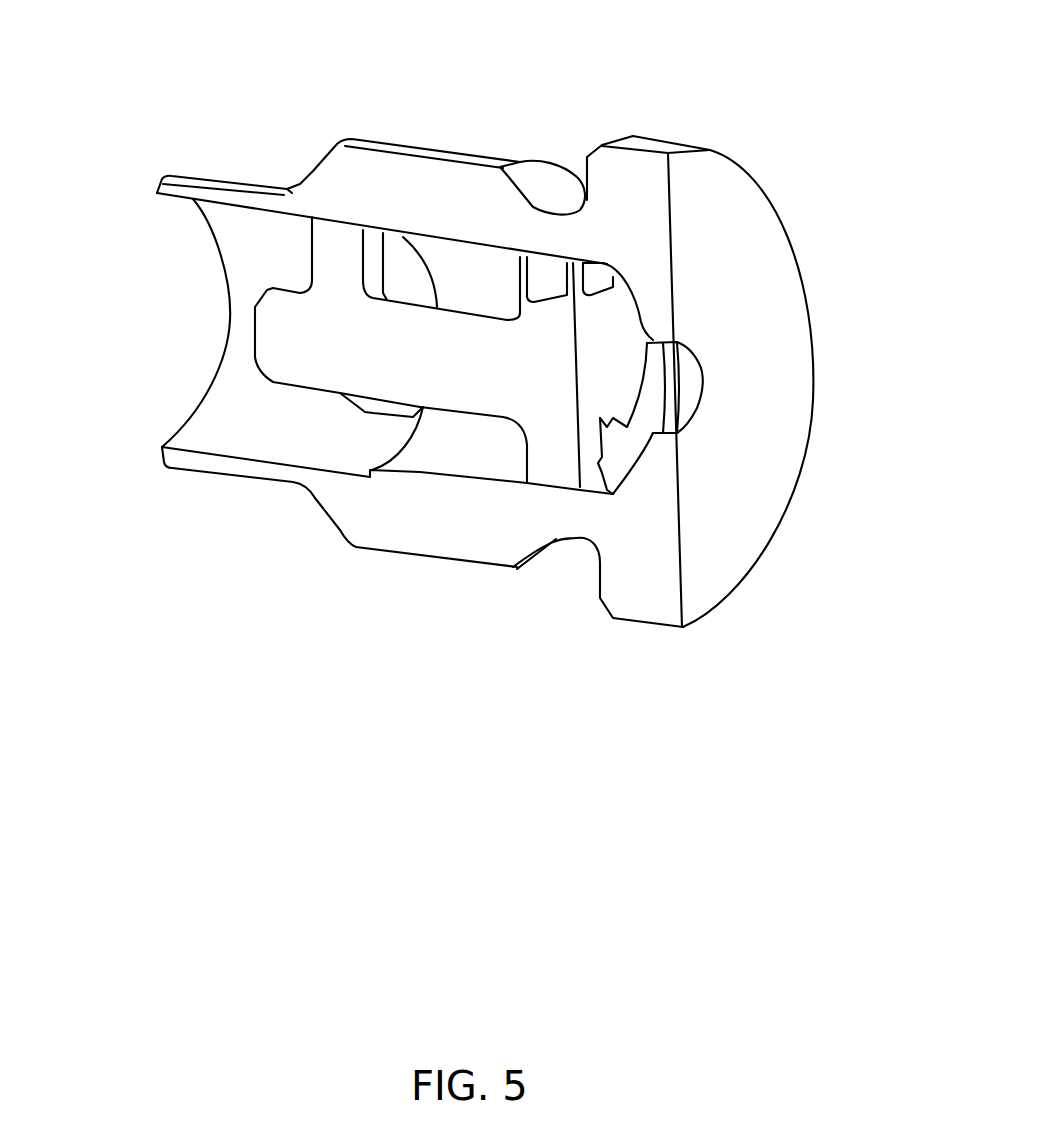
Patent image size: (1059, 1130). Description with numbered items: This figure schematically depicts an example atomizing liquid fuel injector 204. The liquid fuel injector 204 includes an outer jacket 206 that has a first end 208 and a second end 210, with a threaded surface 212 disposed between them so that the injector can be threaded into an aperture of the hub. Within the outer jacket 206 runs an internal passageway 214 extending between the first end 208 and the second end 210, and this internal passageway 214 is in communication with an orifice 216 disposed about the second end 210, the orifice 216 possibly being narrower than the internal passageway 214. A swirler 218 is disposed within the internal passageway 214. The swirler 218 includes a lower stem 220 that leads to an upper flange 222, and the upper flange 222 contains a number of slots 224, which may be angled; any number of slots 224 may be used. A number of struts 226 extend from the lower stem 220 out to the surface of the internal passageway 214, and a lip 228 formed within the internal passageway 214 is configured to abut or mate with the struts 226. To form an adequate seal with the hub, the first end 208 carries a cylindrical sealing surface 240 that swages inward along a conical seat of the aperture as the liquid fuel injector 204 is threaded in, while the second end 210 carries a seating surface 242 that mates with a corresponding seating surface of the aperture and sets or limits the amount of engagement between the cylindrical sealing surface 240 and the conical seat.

The liquid fuel injector 204 is at (676, 48).
The outer jacket 206 is at (643, 615).
The first end 208 is at (144, 507).
The second end 210 is at (798, 159).
The threaded surface 212 is at (397, 551).
The internal passageway 214 is at (280, 427).
The orifice 216 is at (690, 412).
The swirler 218 is at (438, 362).
The lower stem 220 is at (310, 348).
The upper flange 222 is at (545, 448).
The slots 224 is at (545, 275).
The struts 226 is at (340, 258).
The lip 228 is at (364, 230).
The cylindrical sealing surface 240 is at (203, 178).
The seating surface 242 is at (597, 578).